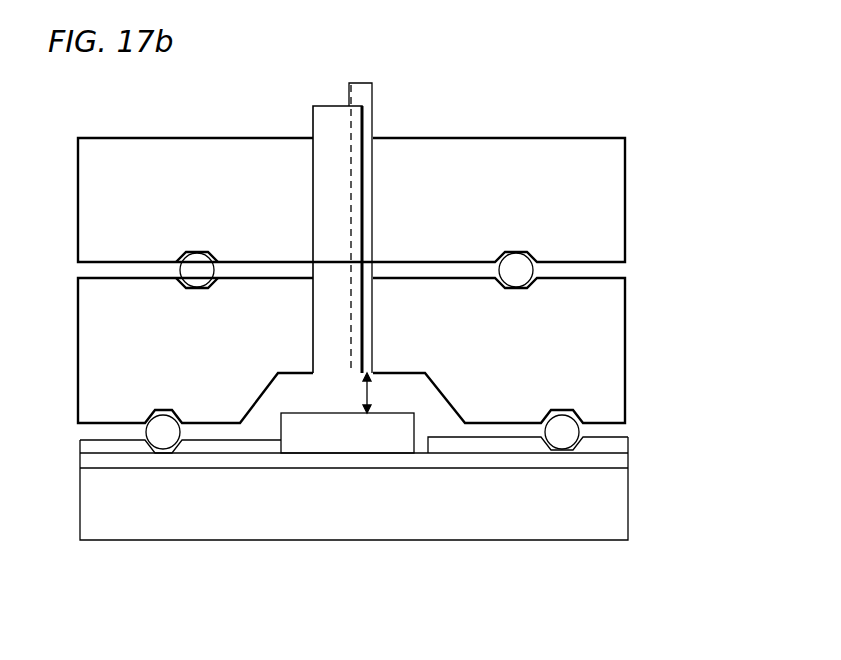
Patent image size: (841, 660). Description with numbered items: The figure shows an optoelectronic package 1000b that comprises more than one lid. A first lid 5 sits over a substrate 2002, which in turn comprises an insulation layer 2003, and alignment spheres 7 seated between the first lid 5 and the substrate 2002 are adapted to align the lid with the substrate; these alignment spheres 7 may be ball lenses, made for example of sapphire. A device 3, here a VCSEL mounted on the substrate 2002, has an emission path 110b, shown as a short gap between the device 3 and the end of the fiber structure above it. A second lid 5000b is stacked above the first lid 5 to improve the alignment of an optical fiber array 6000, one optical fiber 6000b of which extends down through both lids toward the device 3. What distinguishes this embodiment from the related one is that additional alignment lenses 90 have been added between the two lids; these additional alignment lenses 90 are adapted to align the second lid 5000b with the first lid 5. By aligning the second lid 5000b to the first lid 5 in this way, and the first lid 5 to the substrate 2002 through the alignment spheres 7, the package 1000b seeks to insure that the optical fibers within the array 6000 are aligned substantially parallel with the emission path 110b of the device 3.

The package 1000b is at (410, 168).
The second lid 5000b is at (625, 210).
The first lid 5 is at (625, 337).
The additional alignment lenses 90 is at (196, 264).
The alignment spheres 7 is at (160, 428).
The substrate 2002 is at (628, 505).
The insulation layer 2003 is at (628, 457).
The device 3 is at (330, 453).
The optical fiber array 6000 is at (373, 130).
The optical fiber 6000b is at (359, 82).
The emission path 110b is at (390, 395).